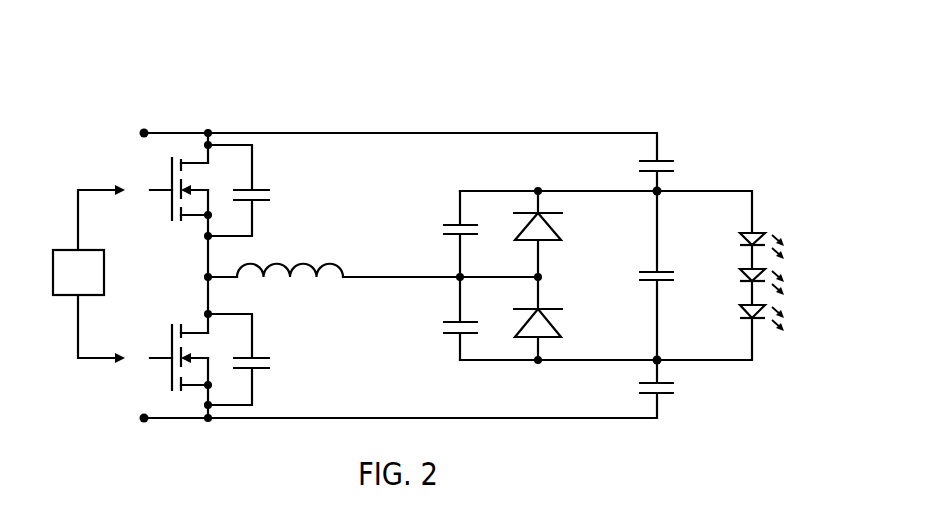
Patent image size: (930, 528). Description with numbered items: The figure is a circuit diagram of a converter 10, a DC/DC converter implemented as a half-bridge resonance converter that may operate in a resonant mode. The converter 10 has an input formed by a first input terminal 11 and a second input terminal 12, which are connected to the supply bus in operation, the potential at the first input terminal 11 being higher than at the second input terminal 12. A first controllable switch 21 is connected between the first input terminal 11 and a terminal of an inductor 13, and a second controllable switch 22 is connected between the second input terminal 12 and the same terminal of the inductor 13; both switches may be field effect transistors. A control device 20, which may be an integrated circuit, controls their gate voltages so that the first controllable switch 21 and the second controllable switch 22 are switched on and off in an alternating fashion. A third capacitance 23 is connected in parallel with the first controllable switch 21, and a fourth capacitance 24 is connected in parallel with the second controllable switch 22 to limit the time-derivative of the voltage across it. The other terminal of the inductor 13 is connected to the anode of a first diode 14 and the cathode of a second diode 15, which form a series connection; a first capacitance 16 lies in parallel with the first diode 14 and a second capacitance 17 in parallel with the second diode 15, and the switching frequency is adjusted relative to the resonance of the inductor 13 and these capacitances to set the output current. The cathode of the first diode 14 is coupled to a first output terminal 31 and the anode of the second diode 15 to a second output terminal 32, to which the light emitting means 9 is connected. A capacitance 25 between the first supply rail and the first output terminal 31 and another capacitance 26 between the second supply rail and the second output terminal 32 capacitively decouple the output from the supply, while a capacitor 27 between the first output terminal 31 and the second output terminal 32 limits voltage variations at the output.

The light emitting means 9 is at (768, 212).
The converter 10 is at (90, 80).
The first input terminal 11 is at (142, 131).
The second input terminal 12 is at (142, 421).
The inductor 13 is at (302, 265).
The first diode 14 is at (560, 232).
The second diode 15 is at (560, 330).
The first capacitance 16 is at (445, 223).
The second capacitance 17 is at (445, 320).
The control device 20 is at (104, 252).
The first controllable switch 21 is at (148, 182).
The second controllable switch 22 is at (152, 371).
The third capacitance 23 is at (266, 189).
The fourth capacitance 24 is at (266, 357).
The capacitance 25 is at (661, 160).
The other capacitance 26 is at (670, 396).
The capacitor 27 is at (640, 271).
The first output terminal 31 is at (660, 194).
The second output terminal 32 is at (662, 358).